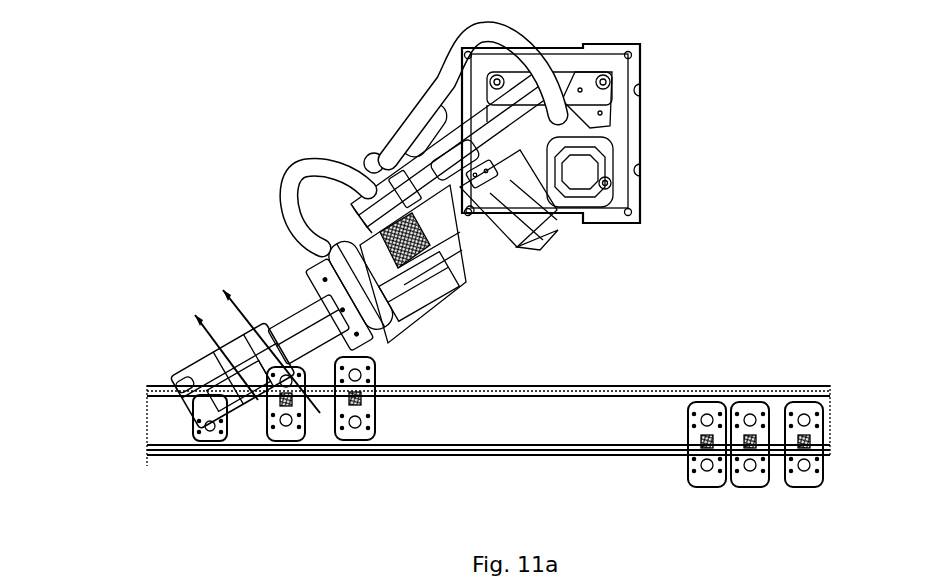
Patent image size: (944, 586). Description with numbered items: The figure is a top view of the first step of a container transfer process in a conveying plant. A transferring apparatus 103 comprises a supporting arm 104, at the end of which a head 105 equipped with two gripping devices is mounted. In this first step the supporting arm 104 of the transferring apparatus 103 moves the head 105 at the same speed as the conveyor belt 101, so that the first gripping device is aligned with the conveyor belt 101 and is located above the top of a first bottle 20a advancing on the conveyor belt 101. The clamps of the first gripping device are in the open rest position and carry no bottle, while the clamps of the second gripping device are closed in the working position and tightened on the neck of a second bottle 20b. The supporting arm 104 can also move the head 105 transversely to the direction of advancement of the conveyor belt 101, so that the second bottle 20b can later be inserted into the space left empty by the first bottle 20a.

The conveyor belt 101 is at (600, 413).
The transferring apparatus 103 is at (690, 104).
The supporting arm 104 is at (362, 102).
The head 105 is at (197, 420).
The first bottle 20a is at (196, 450).
The second bottle 20b is at (172, 354).